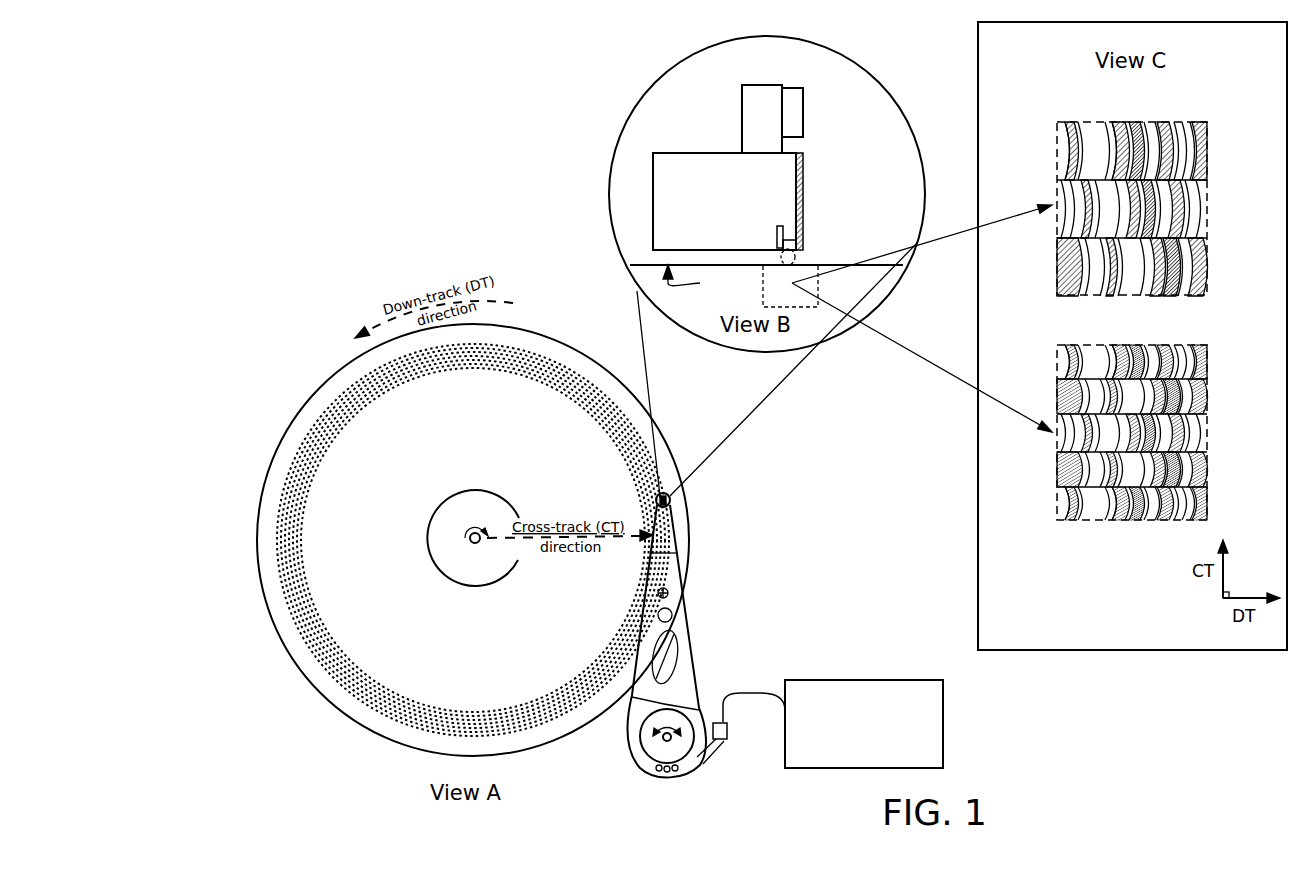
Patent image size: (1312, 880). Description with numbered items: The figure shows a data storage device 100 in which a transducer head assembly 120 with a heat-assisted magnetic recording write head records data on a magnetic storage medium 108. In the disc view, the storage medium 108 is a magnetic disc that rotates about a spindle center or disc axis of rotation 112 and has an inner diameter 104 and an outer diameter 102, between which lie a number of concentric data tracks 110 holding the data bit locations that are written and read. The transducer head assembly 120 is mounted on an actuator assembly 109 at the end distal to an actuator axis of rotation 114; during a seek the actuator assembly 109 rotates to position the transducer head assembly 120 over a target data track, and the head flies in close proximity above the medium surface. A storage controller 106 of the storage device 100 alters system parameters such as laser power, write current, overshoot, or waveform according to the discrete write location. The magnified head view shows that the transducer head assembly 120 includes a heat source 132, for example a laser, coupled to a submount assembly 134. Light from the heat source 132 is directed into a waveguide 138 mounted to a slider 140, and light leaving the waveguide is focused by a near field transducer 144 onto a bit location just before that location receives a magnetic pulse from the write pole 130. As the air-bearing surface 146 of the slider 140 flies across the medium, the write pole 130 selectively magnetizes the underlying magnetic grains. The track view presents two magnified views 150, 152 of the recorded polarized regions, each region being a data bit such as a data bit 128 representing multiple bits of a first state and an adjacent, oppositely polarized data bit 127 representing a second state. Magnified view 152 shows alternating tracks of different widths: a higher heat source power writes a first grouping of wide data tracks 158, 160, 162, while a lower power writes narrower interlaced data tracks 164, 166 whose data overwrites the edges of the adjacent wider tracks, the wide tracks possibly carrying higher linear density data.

The data storage device 100 is at (380, 115).
The outer diameter 102 is at (327, 380).
The inner diameter 104 is at (425, 547).
The storage controller 106 is at (833, 724).
The magnetic storage medium 108 is at (343, 715).
The actuator assembly 109 is at (682, 630).
The concentric data tracks 110 is at (307, 648).
The disc axis of rotation 112 is at (465, 530).
The actuator axis of rotation 114 is at (662, 737).
The transducer head assembly 120 is at (670, 502).
The data bit 127 is at (1057, 123).
The data bit 128 is at (1085, 122).
The write pole 130 is at (707, 760).
The heat source 132 is at (790, 88).
The submount assembly 134 is at (742, 128).
The waveguide 138 is at (798, 180).
The slider 140 is at (740, 153).
The near field transducer 144 is at (778, 226).
The air-bearing surface 146 is at (701, 279).
The magnified view 150 is at (1095, 179).
The magnified view 152 is at (1177, 419).
The data track 158 is at (1220, 357).
The data track 160 is at (1220, 433).
The data track 162 is at (1220, 505).
The interlaced data track 164 is at (1220, 395).
The interlaced data track 166 is at (1220, 467).